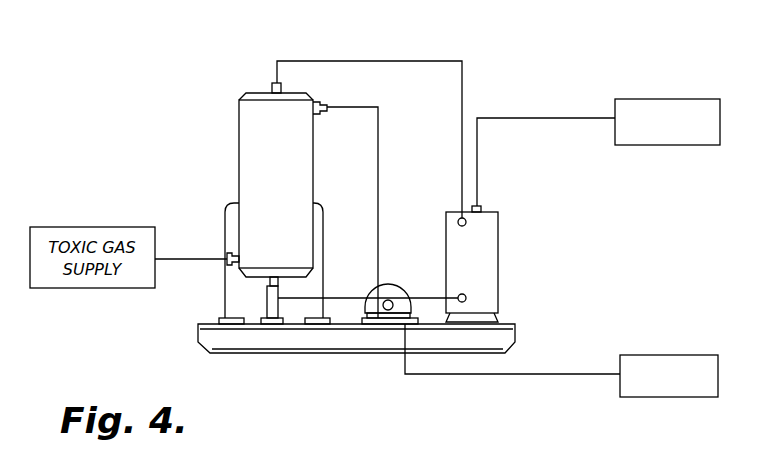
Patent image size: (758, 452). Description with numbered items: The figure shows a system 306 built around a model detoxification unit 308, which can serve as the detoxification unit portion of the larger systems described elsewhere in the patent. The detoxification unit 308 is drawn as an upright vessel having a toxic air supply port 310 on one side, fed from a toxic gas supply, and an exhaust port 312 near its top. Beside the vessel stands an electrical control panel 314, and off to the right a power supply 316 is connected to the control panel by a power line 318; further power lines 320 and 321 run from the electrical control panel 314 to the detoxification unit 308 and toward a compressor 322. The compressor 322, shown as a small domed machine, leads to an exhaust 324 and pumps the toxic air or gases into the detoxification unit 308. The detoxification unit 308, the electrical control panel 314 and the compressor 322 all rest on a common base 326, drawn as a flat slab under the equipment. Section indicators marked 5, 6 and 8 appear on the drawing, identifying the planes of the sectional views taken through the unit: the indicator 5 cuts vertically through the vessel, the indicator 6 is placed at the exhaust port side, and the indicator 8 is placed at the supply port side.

The system 306 is at (676, 80).
The model detoxification unit 308 is at (250, 113).
The toxic air supply port 310 is at (240, 249).
The exhaust port 312 is at (318, 107).
The electrical control panel 314 is at (482, 268).
The power supply 316 is at (655, 146).
The power line 318 is at (533, 118).
The power line 320 is at (423, 60).
The power line 321 is at (338, 296).
The compressor 322 is at (393, 282).
The exhaust 324 is at (682, 354).
The base 326 is at (306, 345).
The section line 5- 5 is at (300, 33).
The section line 6- 6 is at (358, 110).
The section line 8- 8 is at (207, 262).